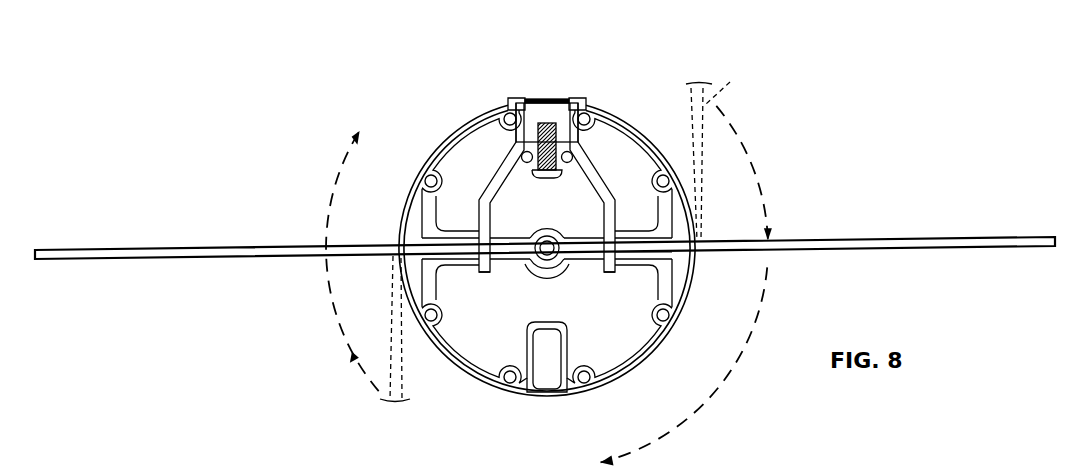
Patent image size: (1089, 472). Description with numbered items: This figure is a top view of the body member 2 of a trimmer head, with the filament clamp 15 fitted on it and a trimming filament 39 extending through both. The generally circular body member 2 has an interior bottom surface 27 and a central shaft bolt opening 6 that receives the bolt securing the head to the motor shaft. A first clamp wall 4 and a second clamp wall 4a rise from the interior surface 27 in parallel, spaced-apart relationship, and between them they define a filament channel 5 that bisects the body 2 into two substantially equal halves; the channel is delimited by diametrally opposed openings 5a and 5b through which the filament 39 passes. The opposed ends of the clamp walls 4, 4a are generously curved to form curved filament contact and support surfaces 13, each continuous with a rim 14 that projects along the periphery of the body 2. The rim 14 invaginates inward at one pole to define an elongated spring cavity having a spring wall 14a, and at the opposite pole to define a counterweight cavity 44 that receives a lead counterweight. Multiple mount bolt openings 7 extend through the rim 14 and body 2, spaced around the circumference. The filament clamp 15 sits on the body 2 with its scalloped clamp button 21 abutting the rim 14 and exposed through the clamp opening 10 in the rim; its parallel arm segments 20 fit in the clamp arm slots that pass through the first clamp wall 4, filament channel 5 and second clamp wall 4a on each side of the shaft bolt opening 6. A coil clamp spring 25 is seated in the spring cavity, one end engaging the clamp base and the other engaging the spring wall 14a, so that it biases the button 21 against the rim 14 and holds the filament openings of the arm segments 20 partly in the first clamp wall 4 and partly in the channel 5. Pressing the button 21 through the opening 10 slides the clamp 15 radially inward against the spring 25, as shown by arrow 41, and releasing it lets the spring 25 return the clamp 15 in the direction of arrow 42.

The body member 2 is at (466, 109).
The first clamp wall 4 is at (581, 241).
The second clamp wall 4a is at (531, 262).
The filament channel 5 is at (700, 231).
The opening 5a is at (416, 241).
The opening 5b is at (662, 253).
The central shaft bolt opening 6 is at (550, 234).
The mount bolt openings 7 is at (505, 110).
The clamp opening 10 is at (532, 96).
The curved filament contact and support surface 13 is at (413, 208).
The rim 14 is at (456, 128).
The spring wall 14a is at (529, 162).
The filament clamp 15 is at (483, 188).
The parallel arm segments 20 is at (481, 273).
The clamp button 21 is at (543, 101).
The clamp spring 25 is at (551, 170).
The interior bottom surface 27 is at (462, 222).
The trimming filament 39 is at (733, 80).
The arrow 41 is at (463, 192).
The arrow 42 is at (627, 152).
The counterweight cavity 44 is at (550, 374).